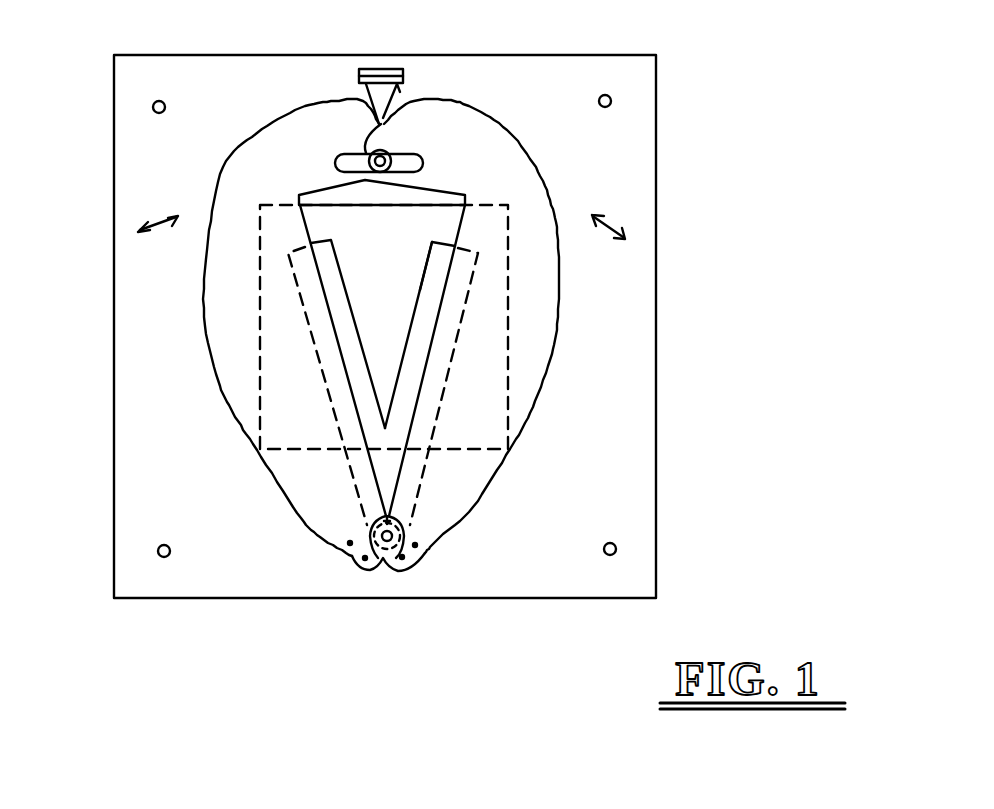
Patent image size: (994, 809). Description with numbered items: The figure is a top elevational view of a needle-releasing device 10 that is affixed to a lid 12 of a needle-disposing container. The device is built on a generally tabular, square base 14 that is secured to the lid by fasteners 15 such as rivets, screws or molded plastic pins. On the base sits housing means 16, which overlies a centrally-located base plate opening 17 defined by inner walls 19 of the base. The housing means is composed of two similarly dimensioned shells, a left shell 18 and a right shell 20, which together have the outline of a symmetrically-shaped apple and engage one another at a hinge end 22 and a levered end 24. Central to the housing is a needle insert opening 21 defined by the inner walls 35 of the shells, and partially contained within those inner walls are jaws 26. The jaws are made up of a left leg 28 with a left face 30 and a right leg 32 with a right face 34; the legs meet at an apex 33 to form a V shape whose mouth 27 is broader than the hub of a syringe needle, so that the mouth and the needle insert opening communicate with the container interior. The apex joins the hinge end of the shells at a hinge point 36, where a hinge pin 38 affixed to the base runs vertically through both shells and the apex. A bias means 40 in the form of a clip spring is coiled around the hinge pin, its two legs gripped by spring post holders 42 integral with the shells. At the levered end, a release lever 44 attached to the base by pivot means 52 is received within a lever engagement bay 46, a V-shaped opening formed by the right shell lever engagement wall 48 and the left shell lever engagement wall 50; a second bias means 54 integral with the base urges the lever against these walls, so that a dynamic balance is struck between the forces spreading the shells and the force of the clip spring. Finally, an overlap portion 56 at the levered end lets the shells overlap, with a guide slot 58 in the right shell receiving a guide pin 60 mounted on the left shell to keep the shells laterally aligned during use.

The needle-releasing device 10 is at (750, 512).
The lid 12 is at (746, 0).
The base 14 is at (135, 479).
The fasteners 15 is at (616, 551).
The housing means 16 is at (317, 509).
The base plate opening 17 is at (487, 392).
The left shell 18 is at (243, 398).
The inner walls 19 is at (257, 212).
The right shell 20 is at (458, 490).
The needle insert opening 21 is at (375, 265).
The hinge end 22 is at (350, 545).
The levered end 24 is at (435, 120).
The jaws 26 is at (427, 323).
The mouth 27 is at (400, 222).
The left leg 28 is at (327, 356).
The left face 30 is at (345, 333).
The right leg 32 is at (443, 347).
The apex 33 is at (455, 487).
The right face 34 is at (422, 289).
The inner walls 35 is at (300, 194).
The hinge point 36 is at (385, 560).
The hinge pin 38 is at (360, 567).
The bias means 40 is at (403, 510).
The spring post holders 42 is at (362, 557).
The release lever 44 is at (398, 88).
The lever engagement bay 46 is at (430, 117).
The right shell lever engagement wall 48 is at (412, 100).
The left shell lever engagement wall 50 is at (365, 103).
The pivot means 52 is at (381, 60).
The bias means 54 is at (360, 67).
The overlap portion 56 is at (378, 146).
The guide slot 58 is at (420, 166).
The guide pin 60 is at (390, 160).